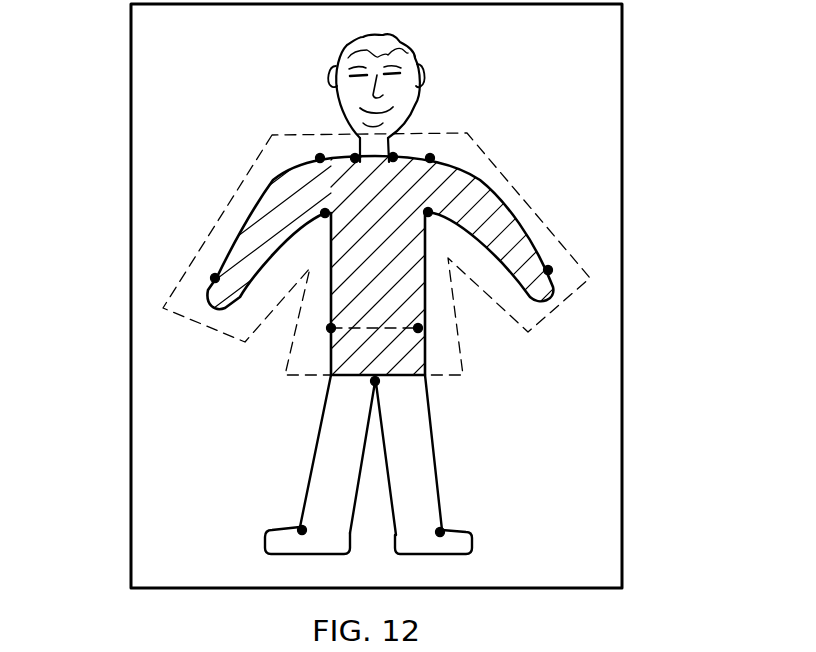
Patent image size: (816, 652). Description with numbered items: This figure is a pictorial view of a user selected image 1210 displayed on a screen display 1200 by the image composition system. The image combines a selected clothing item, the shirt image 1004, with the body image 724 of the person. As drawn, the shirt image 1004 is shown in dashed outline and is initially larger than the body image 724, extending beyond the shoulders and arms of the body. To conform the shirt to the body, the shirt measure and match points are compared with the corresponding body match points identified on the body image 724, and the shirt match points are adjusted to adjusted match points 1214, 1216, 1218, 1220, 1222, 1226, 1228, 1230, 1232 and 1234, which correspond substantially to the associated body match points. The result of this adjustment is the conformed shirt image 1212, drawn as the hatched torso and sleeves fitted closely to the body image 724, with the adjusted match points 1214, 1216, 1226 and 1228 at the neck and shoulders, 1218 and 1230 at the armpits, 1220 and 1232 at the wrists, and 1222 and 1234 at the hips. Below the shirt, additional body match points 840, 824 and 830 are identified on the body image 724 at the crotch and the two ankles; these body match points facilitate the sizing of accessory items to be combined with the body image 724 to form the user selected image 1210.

The screen display 1200 is at (147, 68).
The user selected image 1210 is at (592, 82).
The shirt image 1004 is at (218, 222).
The body image 724 is at (335, 60).
The shirt image 1212 is at (512, 230).
The adjusted match point 1214 is at (355, 157).
The adjusted match point 1216 is at (320, 158).
The adjusted match point 1226 is at (393, 157).
The adjusted match point 1228 is at (430, 158).
The adjusted match point 1218 is at (325, 214).
The adjusted match point 1230 is at (428, 212).
The adjusted match point 1220 is at (215, 278).
The adjusted match point 1232 is at (548, 270).
The adjusted match point 1222 is at (331, 328).
The adjusted match point 1234 is at (418, 328).
The body match point 840 is at (373, 382).
The body match point 824 is at (302, 530).
The body match point 830 is at (440, 532).